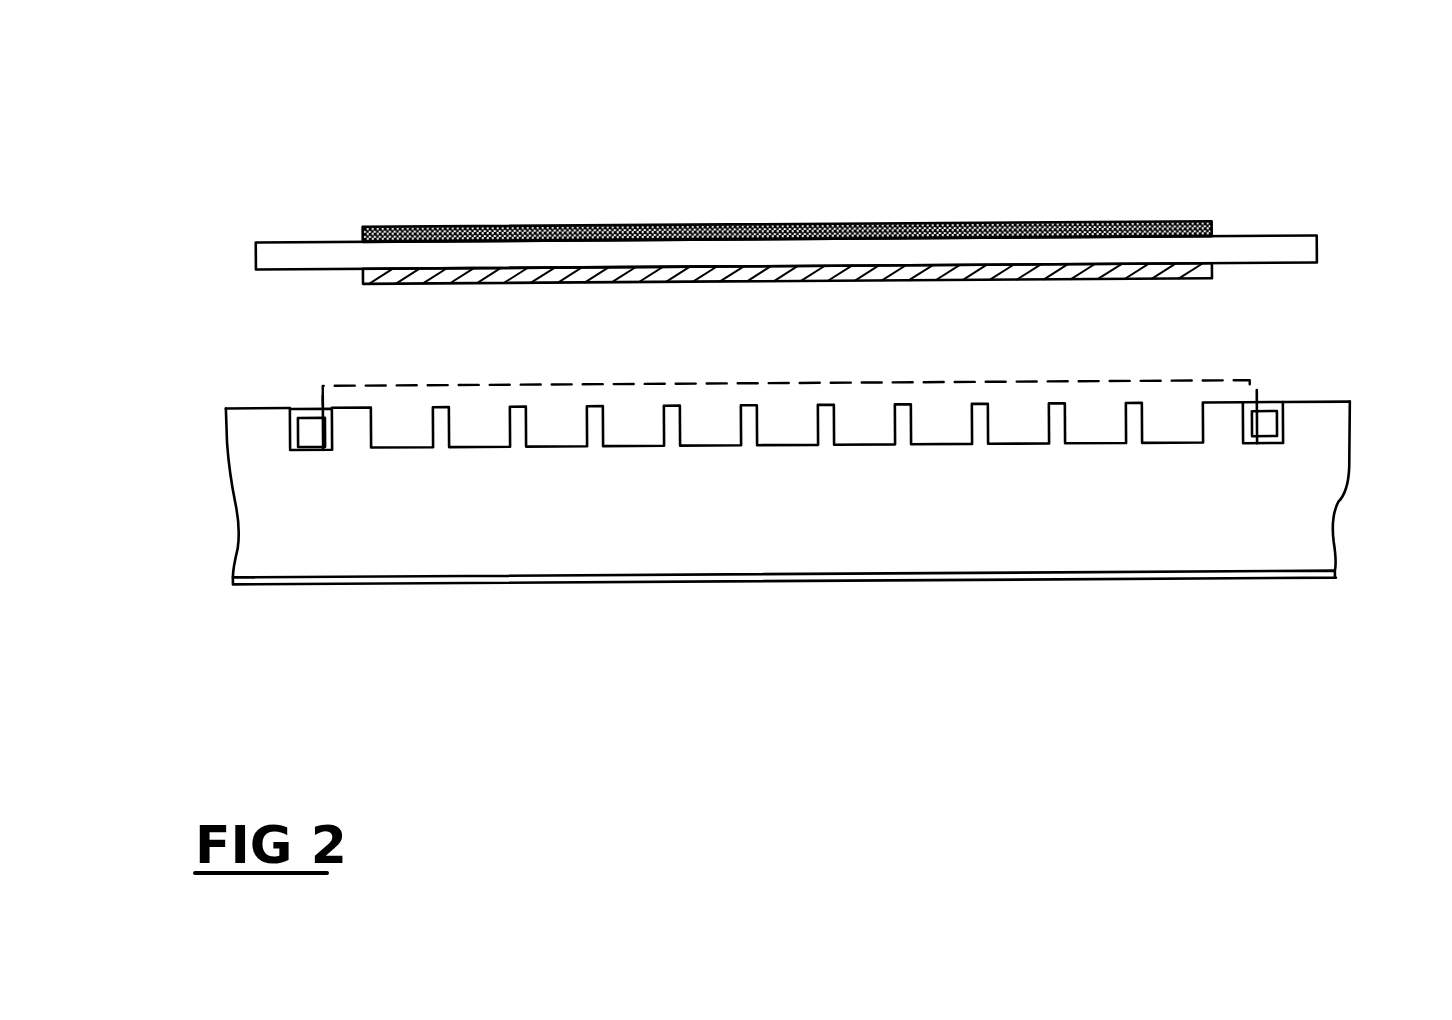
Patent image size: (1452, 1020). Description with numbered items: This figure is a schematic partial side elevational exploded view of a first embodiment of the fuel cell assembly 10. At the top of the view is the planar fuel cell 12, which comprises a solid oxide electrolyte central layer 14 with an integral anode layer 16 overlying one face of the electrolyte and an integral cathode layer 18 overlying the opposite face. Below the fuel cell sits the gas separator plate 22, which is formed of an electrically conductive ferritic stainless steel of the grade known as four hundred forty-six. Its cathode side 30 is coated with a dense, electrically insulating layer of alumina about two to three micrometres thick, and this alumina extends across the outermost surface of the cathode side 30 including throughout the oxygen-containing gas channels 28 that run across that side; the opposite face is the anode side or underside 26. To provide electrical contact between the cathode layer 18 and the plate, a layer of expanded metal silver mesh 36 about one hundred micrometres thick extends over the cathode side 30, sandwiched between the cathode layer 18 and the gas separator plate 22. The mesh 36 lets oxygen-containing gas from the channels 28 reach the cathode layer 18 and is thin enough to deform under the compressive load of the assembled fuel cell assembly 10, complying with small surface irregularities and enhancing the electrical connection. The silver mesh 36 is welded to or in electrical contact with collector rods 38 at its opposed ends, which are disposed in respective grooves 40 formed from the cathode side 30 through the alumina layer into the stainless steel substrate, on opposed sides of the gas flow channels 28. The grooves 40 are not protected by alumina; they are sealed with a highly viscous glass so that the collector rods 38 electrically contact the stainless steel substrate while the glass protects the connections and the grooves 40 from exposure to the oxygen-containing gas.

The fuel cell assembly 10 is at (793, 540).
The planar fuel cell 12 is at (729, 184).
The solid oxide electrolyte central layer 14 is at (282, 255).
The anode layer 16 is at (560, 228).
The cathode layer 18 is at (553, 277).
The gas separator plate 22 is at (441, 543).
The underside 26 is at (686, 582).
The oxidant flow channels 28 is at (866, 436).
The cathode side 30 is at (1318, 400).
The expanded metal silver mesh 36 is at (1068, 378).
The collector rods 38 is at (300, 435).
The grooves 40 is at (305, 412).